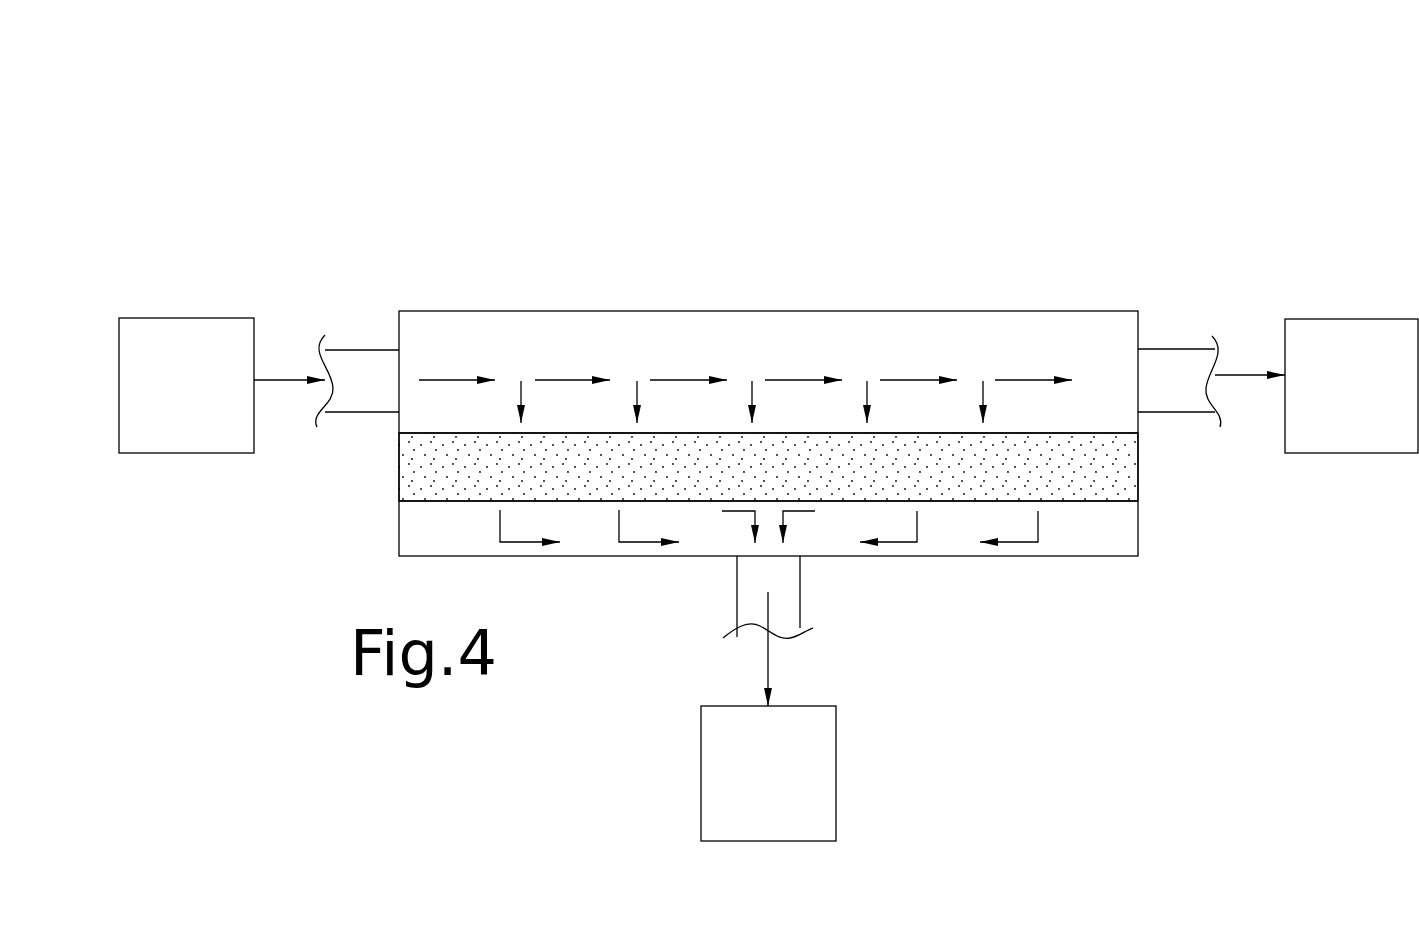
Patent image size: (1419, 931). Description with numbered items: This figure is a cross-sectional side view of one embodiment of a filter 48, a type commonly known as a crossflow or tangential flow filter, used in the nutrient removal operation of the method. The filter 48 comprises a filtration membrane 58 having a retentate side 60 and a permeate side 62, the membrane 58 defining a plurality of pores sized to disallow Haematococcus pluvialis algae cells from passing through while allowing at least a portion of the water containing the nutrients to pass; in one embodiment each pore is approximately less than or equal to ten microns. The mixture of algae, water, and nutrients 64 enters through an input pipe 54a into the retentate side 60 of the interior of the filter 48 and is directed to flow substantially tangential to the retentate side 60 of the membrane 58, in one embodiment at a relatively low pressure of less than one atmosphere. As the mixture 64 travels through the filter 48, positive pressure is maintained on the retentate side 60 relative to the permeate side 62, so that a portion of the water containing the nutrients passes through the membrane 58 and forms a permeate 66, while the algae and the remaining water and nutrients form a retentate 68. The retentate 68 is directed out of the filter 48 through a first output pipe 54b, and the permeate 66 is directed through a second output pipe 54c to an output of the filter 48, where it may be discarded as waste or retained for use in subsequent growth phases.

The filter device 48 is at (791, 280).
The input pipe 54a is at (365, 348).
The first output pipe 54b is at (1183, 348).
The second output pipe 54c is at (800, 595).
The filtration membrane 58 is at (1112, 470).
The retentate side 60 is at (1102, 432).
The permeate side 62 is at (1107, 500).
The mixture of algae, water, and nutrients 64 is at (186, 318).
The permeate 66 is at (836, 772).
The retentate 68 is at (1342, 318).